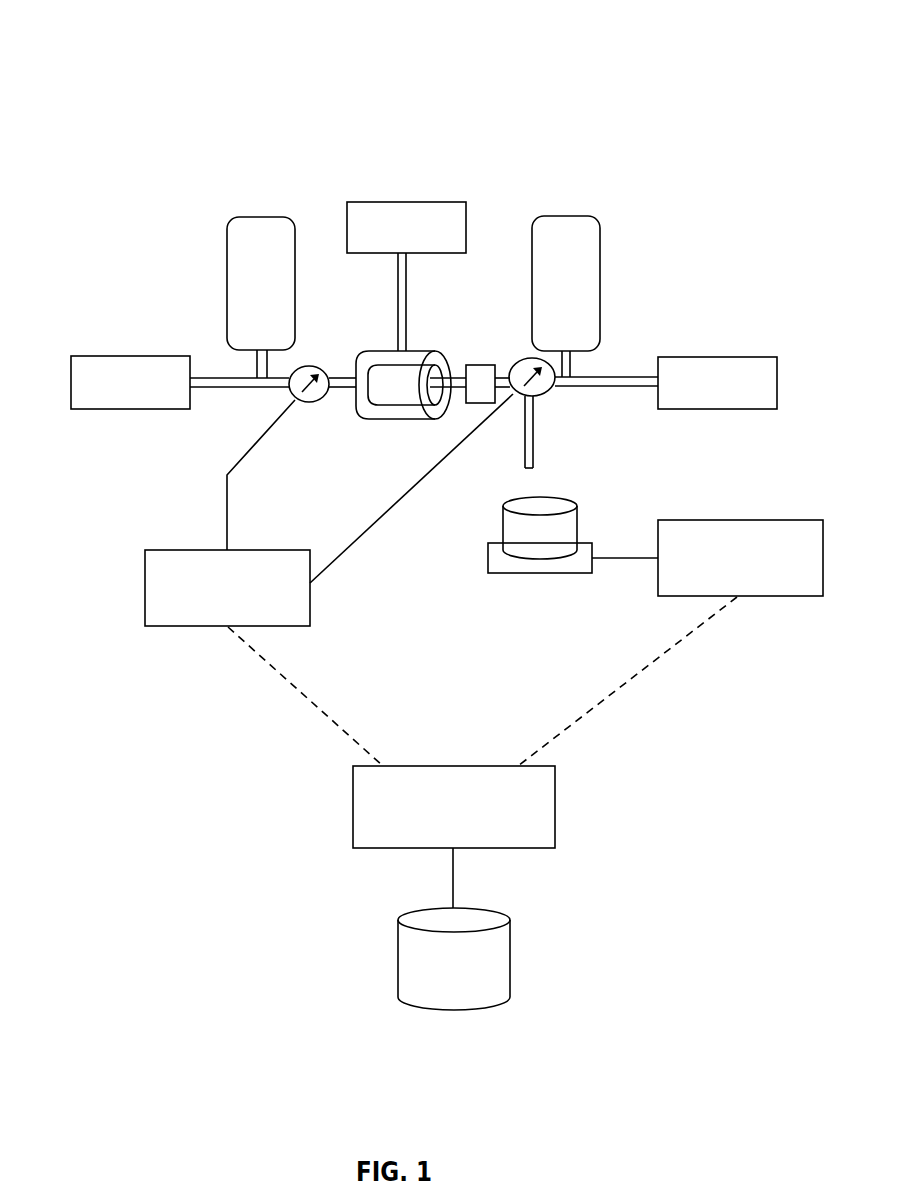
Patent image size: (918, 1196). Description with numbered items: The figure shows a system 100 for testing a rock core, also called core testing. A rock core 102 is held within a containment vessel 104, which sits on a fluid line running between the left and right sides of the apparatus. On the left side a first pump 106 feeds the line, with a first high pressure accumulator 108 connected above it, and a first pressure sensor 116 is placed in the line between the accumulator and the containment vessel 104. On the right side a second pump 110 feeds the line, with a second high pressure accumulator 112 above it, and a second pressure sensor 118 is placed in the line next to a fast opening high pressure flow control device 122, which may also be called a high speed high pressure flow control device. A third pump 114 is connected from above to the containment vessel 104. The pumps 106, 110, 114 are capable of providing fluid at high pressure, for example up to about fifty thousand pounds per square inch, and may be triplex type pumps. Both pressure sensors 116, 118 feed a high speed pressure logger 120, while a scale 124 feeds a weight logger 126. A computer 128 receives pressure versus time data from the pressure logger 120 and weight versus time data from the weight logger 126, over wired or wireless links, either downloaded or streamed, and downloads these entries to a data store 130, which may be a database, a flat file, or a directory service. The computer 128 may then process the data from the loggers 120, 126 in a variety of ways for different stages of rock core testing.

The system 100 is at (89, 88).
The rock core 102 is at (398, 405).
The containment vessel 104 is at (370, 351).
The first pump 106 is at (115, 356).
The first high pressure accumulator 108 is at (265, 216).
The second pump 110 is at (718, 357).
The second high pressure accumulator 112 is at (562, 216).
The third pump 114 is at (400, 202).
The first pressure sensor 116 is at (312, 402).
The second pressure sensor 118 is at (548, 394).
The high speed pressure logger 120 is at (175, 550).
The fast opening high pressure flow control device 122 is at (480, 365).
The scale 124 is at (533, 573).
The weight logger 126 is at (733, 520).
The computer 128 is at (450, 766).
The data store 130 is at (510, 958).